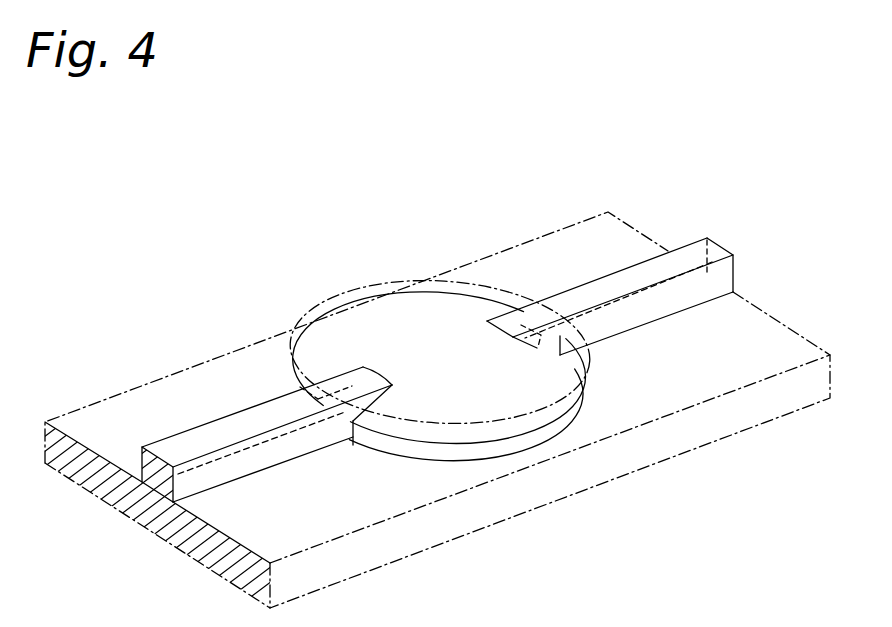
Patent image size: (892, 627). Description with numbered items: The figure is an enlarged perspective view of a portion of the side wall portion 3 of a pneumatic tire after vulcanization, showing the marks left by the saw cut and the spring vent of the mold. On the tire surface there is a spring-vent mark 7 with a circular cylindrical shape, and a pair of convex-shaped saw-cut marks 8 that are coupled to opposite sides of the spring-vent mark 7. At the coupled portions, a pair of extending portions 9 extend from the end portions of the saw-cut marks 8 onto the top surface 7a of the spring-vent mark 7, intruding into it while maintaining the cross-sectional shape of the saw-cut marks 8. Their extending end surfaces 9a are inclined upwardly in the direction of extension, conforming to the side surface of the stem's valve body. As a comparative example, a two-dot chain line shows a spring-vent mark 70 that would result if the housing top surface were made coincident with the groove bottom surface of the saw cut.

The side wall portion 3 is at (572, 253).
The spring-vent mark 70 is at (358, 287).
The extending portions 9 is at (424, 326).
The extending end surfaces 9a is at (513, 337).
The top surface 7a is at (479, 378).
The saw-cut marks 8 is at (437, 354).
The spring-vent mark 7 is at (440, 361).